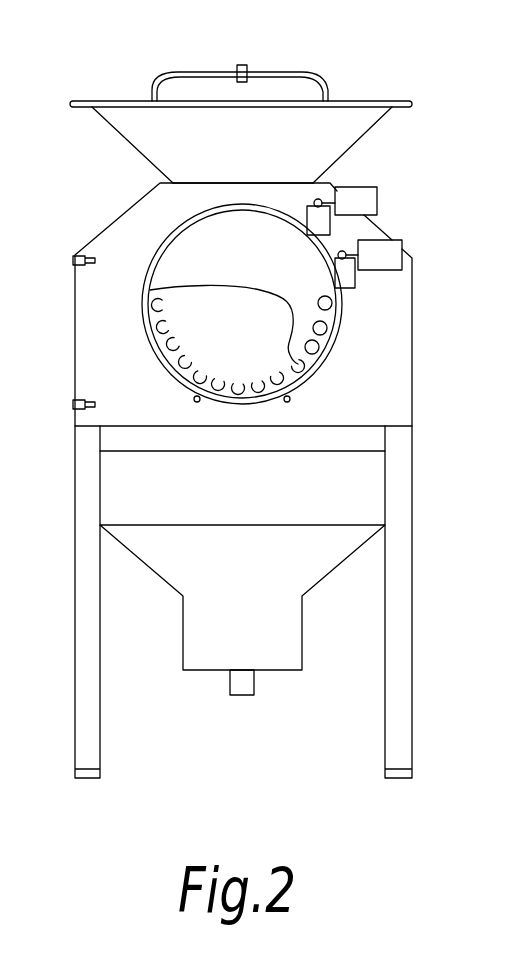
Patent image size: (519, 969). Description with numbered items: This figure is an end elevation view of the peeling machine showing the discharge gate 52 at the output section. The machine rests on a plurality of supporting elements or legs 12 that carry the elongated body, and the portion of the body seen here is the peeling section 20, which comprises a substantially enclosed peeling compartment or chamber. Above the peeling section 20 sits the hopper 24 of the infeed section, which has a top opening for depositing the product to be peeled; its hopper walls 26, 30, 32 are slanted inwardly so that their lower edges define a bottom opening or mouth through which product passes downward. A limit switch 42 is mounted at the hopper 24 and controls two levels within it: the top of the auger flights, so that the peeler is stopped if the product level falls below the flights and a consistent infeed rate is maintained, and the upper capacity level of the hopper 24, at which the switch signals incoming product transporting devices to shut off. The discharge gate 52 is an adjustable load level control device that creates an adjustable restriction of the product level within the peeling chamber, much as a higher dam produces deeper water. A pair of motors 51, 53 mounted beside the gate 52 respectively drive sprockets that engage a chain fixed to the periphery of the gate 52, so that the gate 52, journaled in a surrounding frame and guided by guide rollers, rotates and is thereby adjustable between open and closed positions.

The legs 12 is at (73, 725).
The peeling section 20 is at (109, 222).
The hopper 24 is at (118, 100).
The hopper wall 26 is at (130, 145).
The hopper wall 30 is at (368, 128).
The hopper wall 32 is at (245, 164).
The limit switch 42 is at (242, 65).
The motor 51 is at (397, 240).
The discharge gate 52 is at (245, 357).
The motor 53 is at (368, 187).